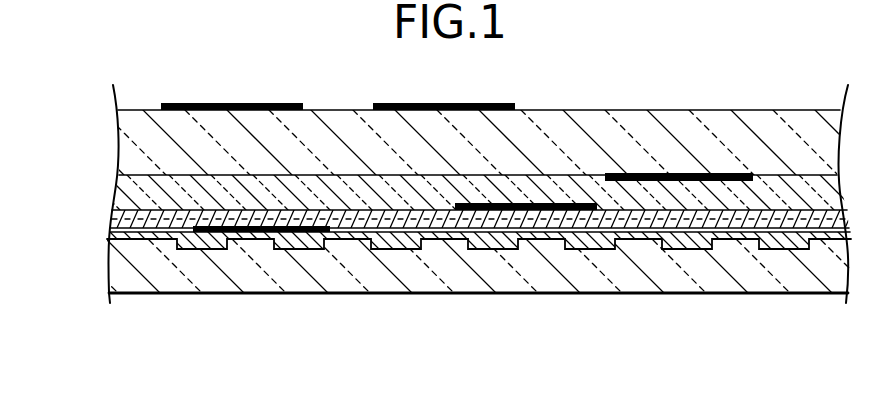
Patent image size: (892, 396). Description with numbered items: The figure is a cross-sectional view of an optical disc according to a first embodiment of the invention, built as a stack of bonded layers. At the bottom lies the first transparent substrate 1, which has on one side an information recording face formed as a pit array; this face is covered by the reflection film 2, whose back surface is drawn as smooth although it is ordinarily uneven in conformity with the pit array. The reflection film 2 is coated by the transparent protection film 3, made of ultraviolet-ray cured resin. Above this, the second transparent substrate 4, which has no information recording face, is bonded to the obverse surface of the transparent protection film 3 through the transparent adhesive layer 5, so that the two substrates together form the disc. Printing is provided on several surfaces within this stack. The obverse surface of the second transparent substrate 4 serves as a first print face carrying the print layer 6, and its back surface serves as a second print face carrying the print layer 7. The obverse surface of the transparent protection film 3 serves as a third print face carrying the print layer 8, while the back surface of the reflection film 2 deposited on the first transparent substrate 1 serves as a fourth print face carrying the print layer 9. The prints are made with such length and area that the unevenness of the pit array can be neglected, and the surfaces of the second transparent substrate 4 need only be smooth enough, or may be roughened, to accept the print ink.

The first transparent substrate 1 is at (122, 278).
The reflection film 2 is at (108, 238).
The transparent protection film 3 is at (113, 220).
The second transparent substrate 4 is at (143, 149).
The adhesive layer 5 is at (123, 193).
The print layer 6 is at (276, 103).
The print layer 7 is at (684, 175).
The print layer 8 is at (539, 210).
The print layer 9 is at (283, 232).